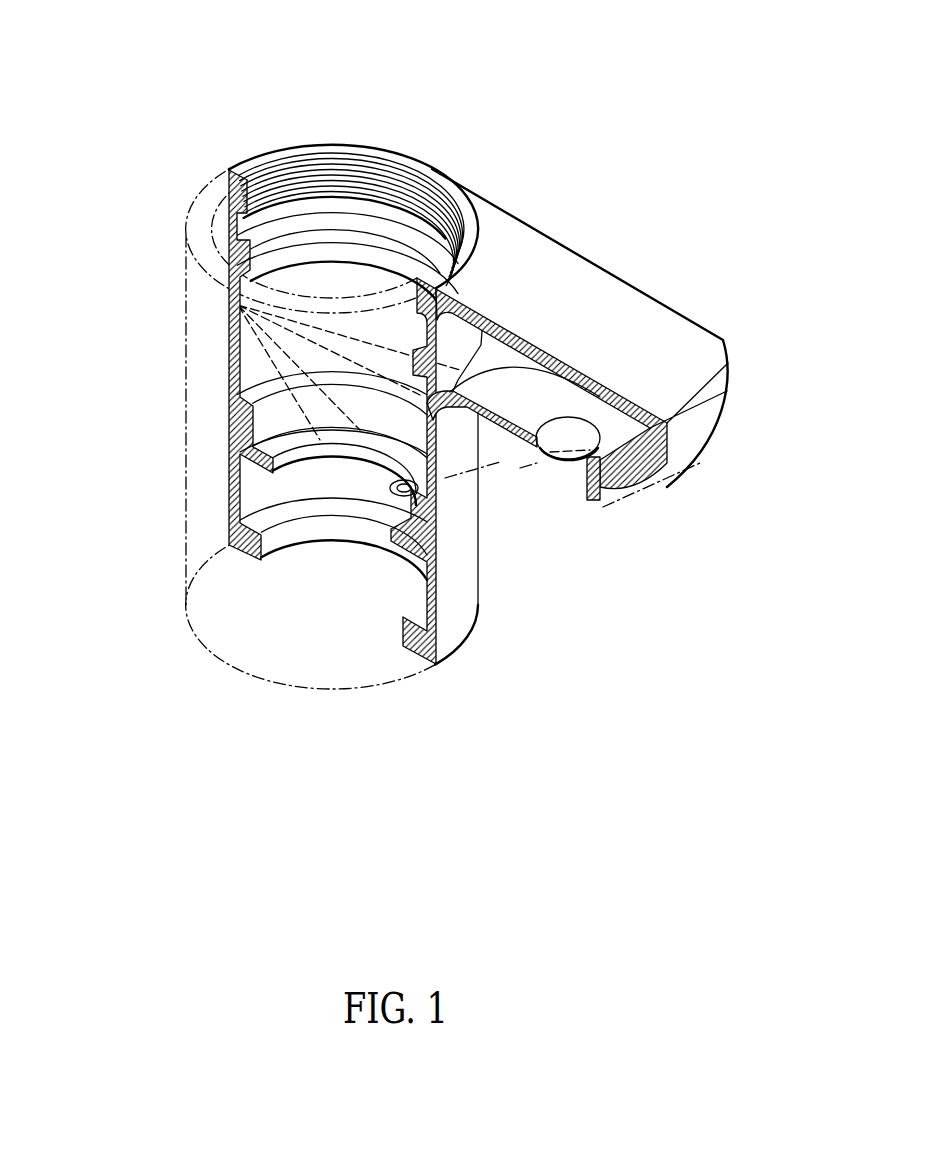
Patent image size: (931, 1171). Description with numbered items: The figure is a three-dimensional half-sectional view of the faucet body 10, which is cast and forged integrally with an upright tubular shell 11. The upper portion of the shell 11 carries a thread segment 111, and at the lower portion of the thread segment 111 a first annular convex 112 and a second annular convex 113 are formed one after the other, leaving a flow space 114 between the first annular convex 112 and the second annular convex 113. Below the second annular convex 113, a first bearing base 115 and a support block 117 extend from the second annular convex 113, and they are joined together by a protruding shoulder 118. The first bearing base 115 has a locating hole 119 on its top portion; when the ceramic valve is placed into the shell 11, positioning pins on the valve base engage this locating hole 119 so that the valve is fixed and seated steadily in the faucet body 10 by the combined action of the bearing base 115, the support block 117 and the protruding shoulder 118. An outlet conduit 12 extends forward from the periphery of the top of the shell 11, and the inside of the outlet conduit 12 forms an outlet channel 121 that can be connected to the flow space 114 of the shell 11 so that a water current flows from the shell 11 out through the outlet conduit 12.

The faucet body 10 is at (434, 362).
The upright tubular shell 11 is at (453, 637).
The outlet conduit 12 is at (596, 294).
The thread segment 111 is at (378, 188).
The first annular convex 112 is at (262, 262).
The second annular convex 113 is at (242, 420).
The flow space 114 is at (240, 345).
The first bearing base 115 is at (382, 500).
The support block 117 is at (240, 510).
The protruding shoulder 118 is at (312, 458).
The locating hole 119 is at (437, 493).
The outlet channel 121 is at (665, 440).